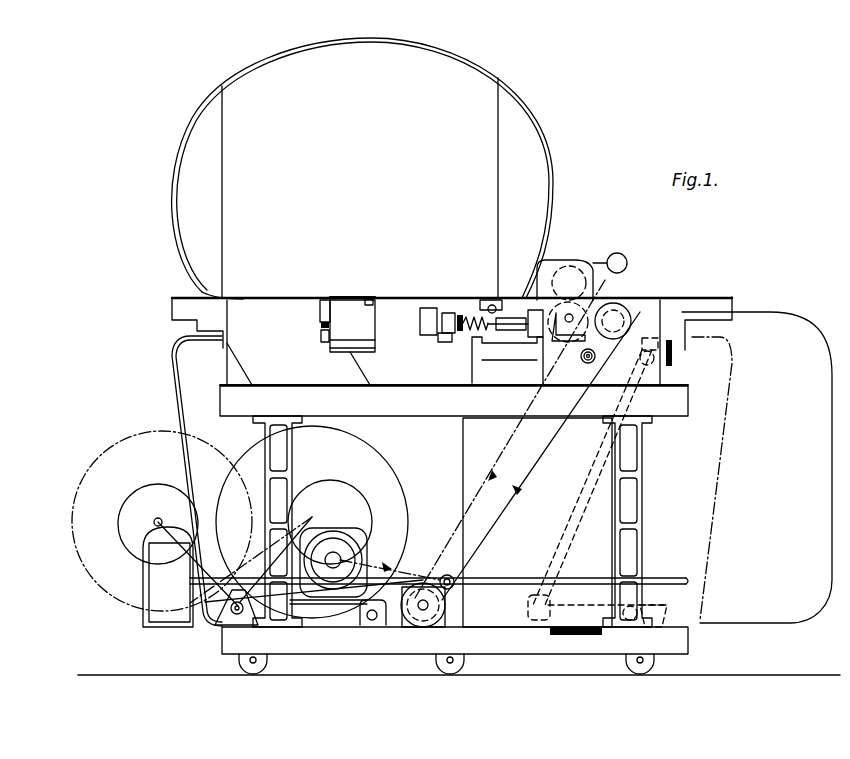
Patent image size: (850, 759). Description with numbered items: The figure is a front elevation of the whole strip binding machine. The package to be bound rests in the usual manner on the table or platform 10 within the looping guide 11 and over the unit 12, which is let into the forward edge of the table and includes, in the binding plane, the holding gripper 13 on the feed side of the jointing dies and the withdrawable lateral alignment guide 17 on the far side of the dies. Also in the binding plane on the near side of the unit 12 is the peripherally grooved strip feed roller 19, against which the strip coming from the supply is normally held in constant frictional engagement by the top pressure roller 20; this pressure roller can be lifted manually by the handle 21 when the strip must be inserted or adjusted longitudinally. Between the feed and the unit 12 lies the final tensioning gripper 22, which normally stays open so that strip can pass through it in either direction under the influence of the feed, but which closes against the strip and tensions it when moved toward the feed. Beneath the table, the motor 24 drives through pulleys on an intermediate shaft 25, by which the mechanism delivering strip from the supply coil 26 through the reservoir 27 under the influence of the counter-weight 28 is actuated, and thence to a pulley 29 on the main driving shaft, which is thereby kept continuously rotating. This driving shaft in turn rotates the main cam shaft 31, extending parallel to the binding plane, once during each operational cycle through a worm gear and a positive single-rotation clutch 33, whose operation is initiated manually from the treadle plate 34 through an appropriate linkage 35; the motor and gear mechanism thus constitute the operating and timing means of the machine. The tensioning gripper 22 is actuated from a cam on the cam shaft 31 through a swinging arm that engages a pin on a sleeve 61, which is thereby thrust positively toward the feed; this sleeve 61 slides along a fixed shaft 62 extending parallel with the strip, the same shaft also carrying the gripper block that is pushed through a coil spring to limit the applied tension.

The table or platform 10 is at (402, 293).
The looping guide 11 is at (556, 178).
The unit 12 is at (346, 335).
The holding gripper 13 is at (370, 297).
The lateral alignment guide 17 is at (322, 298).
The strip feed roller 19 is at (606, 303).
The top pressure roller 20 is at (569, 266).
The handle 21 is at (616, 253).
The final tensioning gripper 22 is at (489, 304).
The motor 24 is at (343, 552).
The intermediate shaft 25 is at (422, 612).
The supply coil 26 is at (172, 432).
The reservoir 27 is at (783, 615).
The counter-weight 28 is at (160, 596).
The pulley 29 is at (624, 304).
The main cam shaft 31 is at (492, 350).
The single-rotation clutch 33 is at (672, 308).
The treadle plate 34 is at (549, 633).
The linkage 35 is at (658, 300).
The sleeve 61 is at (443, 316).
The fixed shaft 62 is at (522, 332).